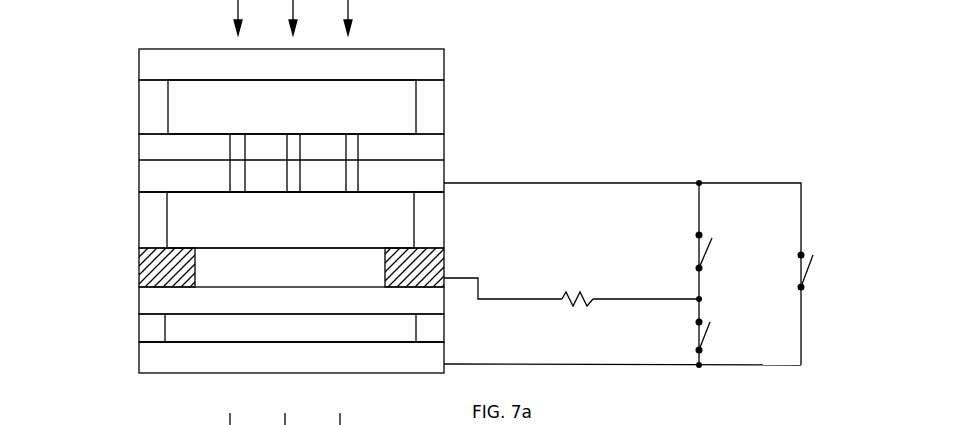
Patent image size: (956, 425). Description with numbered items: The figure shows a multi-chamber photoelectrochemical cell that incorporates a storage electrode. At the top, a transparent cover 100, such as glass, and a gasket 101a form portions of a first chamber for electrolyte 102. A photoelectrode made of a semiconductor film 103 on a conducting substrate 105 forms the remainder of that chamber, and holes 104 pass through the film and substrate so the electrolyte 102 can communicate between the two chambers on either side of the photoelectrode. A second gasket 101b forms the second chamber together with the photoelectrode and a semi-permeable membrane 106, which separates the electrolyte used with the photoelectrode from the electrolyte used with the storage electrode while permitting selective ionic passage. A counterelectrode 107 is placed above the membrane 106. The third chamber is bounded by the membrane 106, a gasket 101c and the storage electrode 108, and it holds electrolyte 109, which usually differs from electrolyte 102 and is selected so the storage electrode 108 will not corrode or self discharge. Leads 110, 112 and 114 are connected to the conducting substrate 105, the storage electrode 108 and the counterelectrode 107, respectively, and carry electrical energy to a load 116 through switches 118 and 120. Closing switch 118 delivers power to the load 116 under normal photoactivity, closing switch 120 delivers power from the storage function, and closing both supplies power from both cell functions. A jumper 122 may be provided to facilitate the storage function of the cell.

The transparent cover 100 is at (140, 62).
The gasket 101a is at (140, 103).
The gasket 101b is at (139, 220).
The gasket 101c is at (140, 330).
The electrolyte 102 is at (385, 113).
The semiconductor film 103 is at (139, 148).
The holes 104 is at (348, 187).
The conducting substrate 105 is at (139, 190).
The semi-permeable membrane 106 is at (139, 265).
The counterelectrode 107 is at (141, 297).
The storage electrode 108 is at (140, 360).
The electrolyte 109 is at (262, 320).
The lead 110 is at (553, 182).
The lead 112 is at (580, 365).
The lead 114 is at (498, 298).
The load 116 is at (577, 298).
The switch 118 is at (708, 250).
The switch 120 is at (708, 332).
The jumper 122 is at (810, 272).